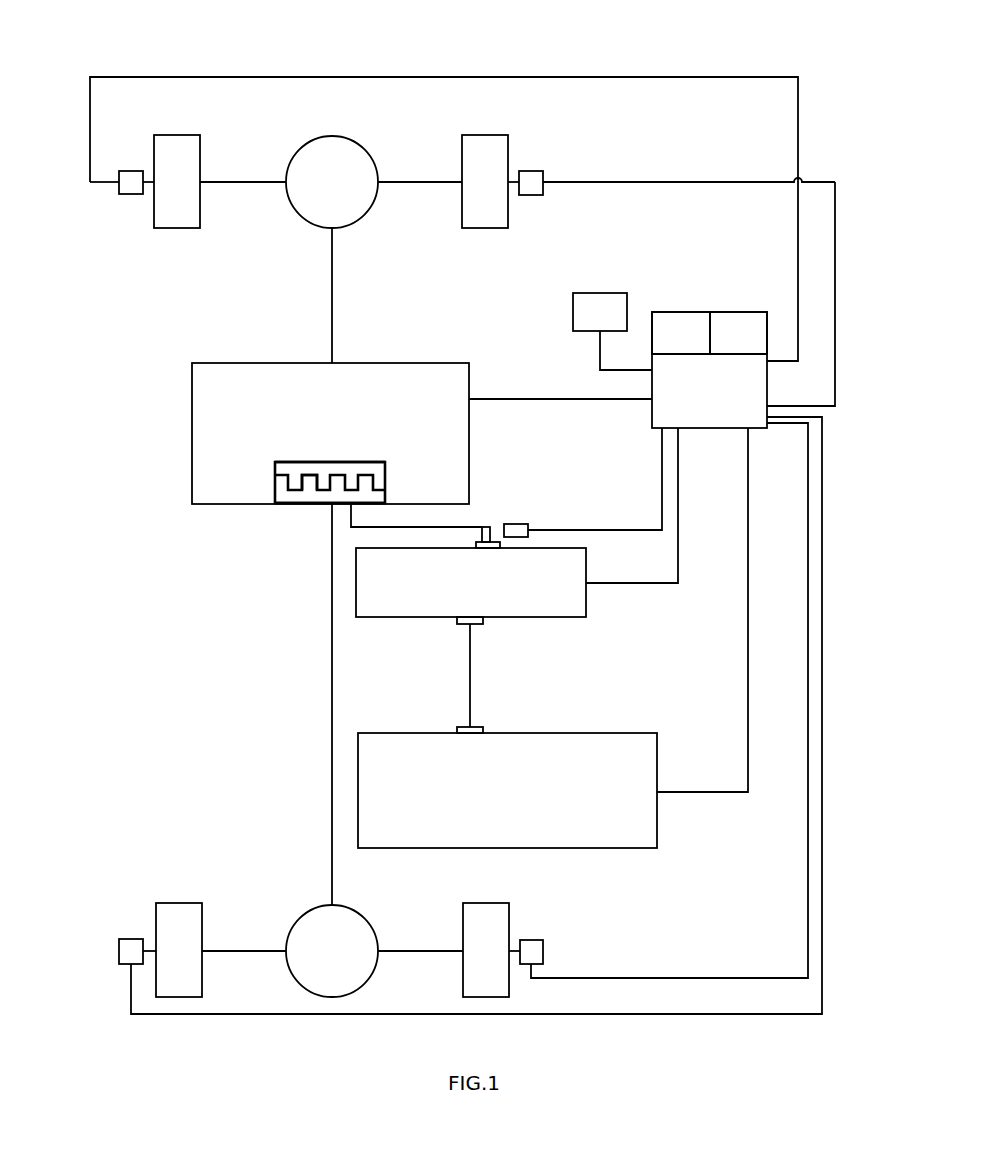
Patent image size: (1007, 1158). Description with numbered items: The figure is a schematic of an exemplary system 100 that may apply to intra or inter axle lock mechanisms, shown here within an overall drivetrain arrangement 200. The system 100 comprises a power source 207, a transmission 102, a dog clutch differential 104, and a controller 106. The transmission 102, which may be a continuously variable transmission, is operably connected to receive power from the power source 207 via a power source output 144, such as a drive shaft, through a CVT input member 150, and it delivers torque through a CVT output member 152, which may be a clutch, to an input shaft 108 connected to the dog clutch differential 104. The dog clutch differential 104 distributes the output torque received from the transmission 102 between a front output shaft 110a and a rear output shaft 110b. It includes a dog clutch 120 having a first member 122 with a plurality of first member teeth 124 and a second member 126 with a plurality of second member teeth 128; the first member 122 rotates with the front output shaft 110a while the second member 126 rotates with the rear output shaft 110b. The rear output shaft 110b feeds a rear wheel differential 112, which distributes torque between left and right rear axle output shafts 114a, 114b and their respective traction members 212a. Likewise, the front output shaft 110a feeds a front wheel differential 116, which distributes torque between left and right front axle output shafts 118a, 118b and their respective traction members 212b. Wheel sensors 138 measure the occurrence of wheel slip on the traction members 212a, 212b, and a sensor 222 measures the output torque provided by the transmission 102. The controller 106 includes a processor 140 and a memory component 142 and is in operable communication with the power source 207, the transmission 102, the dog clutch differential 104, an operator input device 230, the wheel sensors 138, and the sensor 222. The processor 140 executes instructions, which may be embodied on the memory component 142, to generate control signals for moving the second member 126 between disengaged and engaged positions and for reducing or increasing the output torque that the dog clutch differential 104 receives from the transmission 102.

The HVAC system 200 is at (220, 58).
The system 100 is at (690, 234).
The wheel sensors 138 is at (131, 194).
The traction members 212b is at (177, 135).
The left front axle output shaft 118a is at (233, 182).
The right front axle output shaft 118b is at (413, 182).
The front wheel differential 116 is at (350, 194).
The front output shaft 110a is at (332, 294).
The rear output shaft 110b is at (331, 703).
The dog clutch differential 104 is at (384, 358).
The dog clutch 120 is at (301, 452).
The first member 122 is at (277, 467).
The first member teeth 124 is at (280, 482).
The second member 126 is at (288, 497).
The second member teeth 128 is at (323, 485).
The input shaft 108 is at (350, 515).
The CVT output member 152 is at (484, 527).
The sensor 222 is at (517, 523).
The transmission 102 is at (488, 595).
The CVT input member 150 is at (474, 625).
The power source output 144 is at (476, 727).
The power source 207 is at (525, 805).
The operator input device 230 is at (612, 331).
The controller 106 is at (781, 387).
The processor 140 is at (681, 333).
The memory component 142 is at (738, 333).
The traction members 212a is at (177, 903).
The left rear axle output shaft 114a is at (270, 951).
The right rear axle output shaft 114b is at (396, 951).
The rear wheel differential 112 is at (350, 963).